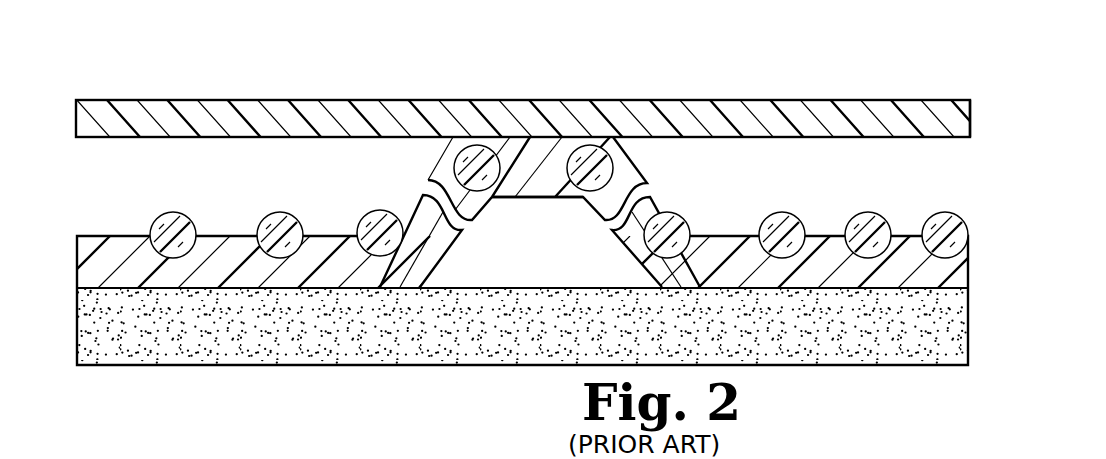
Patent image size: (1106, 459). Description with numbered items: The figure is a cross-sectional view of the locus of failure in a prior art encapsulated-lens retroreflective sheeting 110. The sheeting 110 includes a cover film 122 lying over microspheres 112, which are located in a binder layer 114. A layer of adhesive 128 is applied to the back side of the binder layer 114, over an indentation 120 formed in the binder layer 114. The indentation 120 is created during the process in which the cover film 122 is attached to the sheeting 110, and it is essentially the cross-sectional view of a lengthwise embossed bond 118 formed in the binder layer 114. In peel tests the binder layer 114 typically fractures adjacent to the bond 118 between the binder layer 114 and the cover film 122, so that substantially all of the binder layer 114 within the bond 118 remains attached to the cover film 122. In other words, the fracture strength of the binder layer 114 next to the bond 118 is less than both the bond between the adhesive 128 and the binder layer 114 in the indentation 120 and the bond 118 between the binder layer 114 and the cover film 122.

The prior art sheeting 110 is at (382, 80).
The microspheres 112 is at (947, 213).
The binder layer 114 is at (940, 270).
The embossed bond 118 is at (543, 137).
The indentation 120 is at (533, 198).
The cover film 122 is at (981, 101).
The adhesive 128 is at (953, 328).